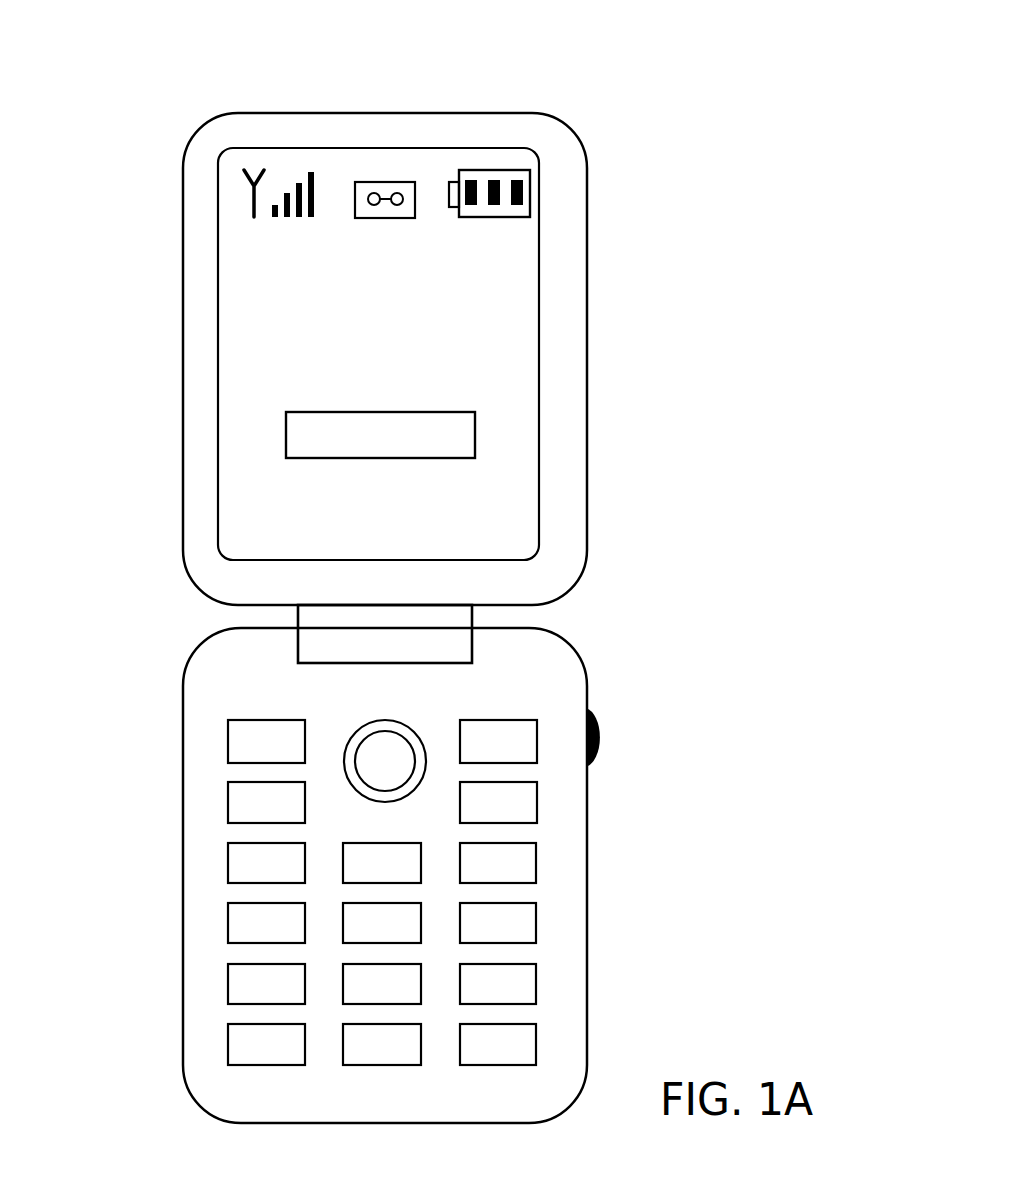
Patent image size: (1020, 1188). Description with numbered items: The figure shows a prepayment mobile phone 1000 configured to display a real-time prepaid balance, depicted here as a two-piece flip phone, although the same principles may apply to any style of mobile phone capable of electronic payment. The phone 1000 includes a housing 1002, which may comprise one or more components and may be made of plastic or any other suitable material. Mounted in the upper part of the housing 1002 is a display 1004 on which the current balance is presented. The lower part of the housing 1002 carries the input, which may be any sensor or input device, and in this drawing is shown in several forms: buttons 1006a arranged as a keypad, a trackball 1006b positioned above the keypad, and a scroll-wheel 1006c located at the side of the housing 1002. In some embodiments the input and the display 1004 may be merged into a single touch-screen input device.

The prepayment mobile phone 1000 is at (382, 572).
The housing 1002 is at (172, 548).
The display 1004 is at (345, 158).
The buttons 1006a is at (148, 722).
The trackballs 1006b is at (380, 745).
The scroll-wheels 1006c is at (608, 732).